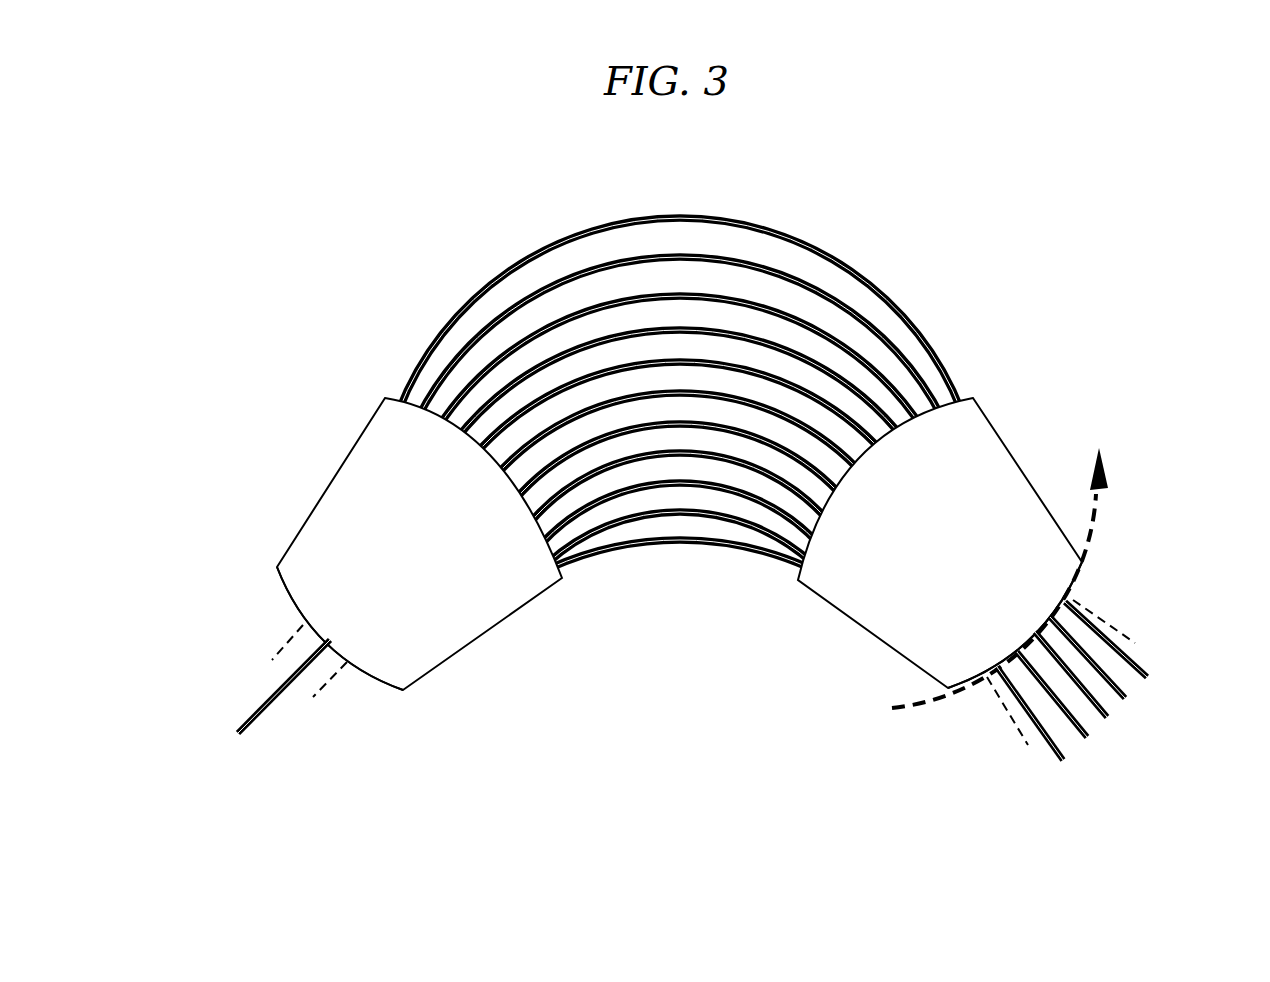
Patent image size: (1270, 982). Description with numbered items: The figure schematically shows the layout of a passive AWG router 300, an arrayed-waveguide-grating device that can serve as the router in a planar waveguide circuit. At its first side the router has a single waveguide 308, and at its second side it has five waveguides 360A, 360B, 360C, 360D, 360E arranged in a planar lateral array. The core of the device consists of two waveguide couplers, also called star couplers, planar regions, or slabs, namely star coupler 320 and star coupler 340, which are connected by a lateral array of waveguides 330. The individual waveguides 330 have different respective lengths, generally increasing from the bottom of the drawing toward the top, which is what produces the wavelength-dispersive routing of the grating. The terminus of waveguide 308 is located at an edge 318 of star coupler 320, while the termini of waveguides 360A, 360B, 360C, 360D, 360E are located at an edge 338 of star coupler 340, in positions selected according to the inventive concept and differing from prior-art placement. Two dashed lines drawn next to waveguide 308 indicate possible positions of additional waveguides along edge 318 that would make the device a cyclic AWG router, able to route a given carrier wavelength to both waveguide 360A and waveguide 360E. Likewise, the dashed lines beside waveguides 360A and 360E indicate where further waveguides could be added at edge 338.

The passive AWG router 300 is at (691, 137).
The waveguide 308 is at (243, 727).
The edge 318 is at (303, 606).
The star coupler 320 is at (426, 661).
The waveguides 330 is at (756, 221).
The edge 338 is at (977, 680).
The star coupler 340 is at (985, 443).
The waveguide 360A is at (1058, 758).
The waveguide 360B is at (1076, 738).
The waveguide 360C is at (1107, 704).
The waveguide 360D is at (1130, 695).
The waveguide 360E is at (1147, 675).